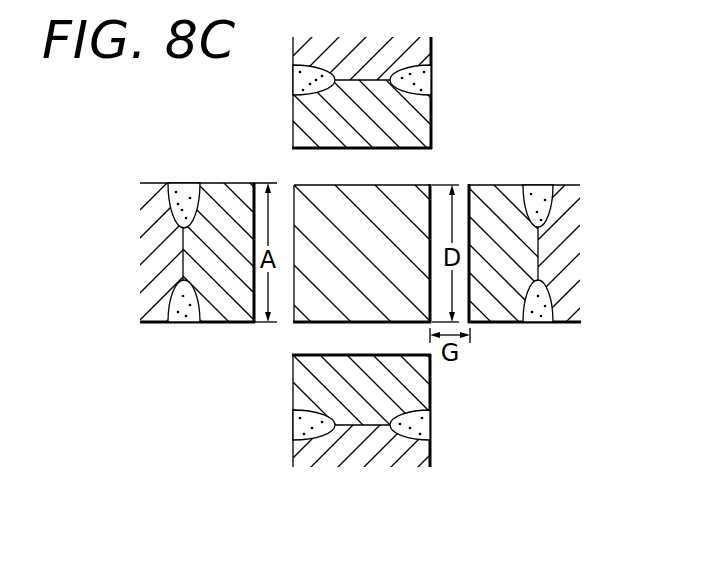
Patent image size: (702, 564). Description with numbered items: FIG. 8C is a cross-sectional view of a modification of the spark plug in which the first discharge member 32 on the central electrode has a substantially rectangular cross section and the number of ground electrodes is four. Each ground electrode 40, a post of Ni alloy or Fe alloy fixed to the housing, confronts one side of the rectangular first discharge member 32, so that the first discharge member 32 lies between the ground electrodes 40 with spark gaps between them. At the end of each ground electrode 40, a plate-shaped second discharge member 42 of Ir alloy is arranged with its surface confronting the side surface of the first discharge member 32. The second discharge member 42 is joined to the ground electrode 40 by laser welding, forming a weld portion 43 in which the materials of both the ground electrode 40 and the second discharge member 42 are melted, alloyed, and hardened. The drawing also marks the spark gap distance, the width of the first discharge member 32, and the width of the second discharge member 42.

The first discharge member 32 is at (431, 184).
The ground electrode 40 is at (432, 41).
The second discharge member 42 is at (432, 108).
The weld portion 43 is at (431, 80).